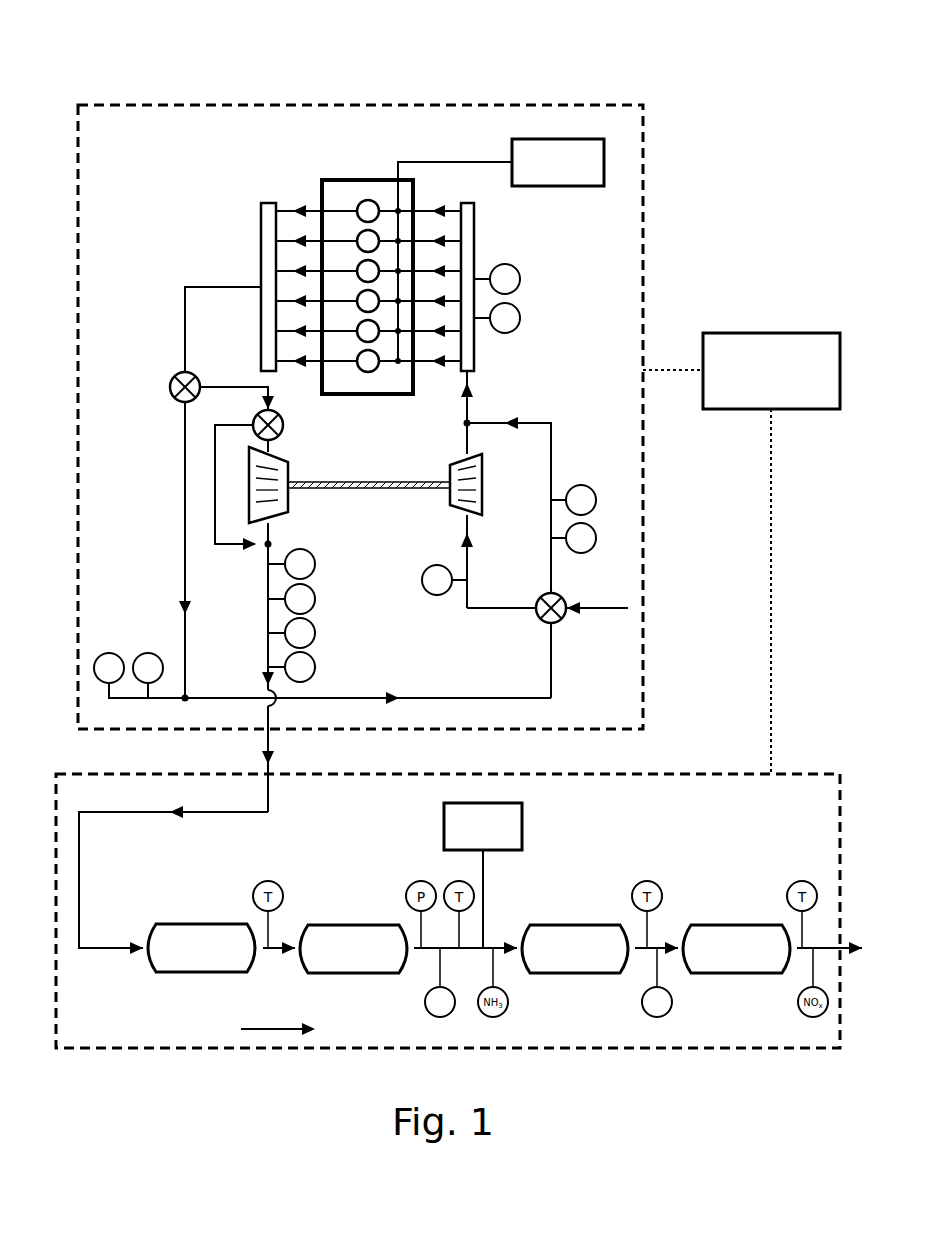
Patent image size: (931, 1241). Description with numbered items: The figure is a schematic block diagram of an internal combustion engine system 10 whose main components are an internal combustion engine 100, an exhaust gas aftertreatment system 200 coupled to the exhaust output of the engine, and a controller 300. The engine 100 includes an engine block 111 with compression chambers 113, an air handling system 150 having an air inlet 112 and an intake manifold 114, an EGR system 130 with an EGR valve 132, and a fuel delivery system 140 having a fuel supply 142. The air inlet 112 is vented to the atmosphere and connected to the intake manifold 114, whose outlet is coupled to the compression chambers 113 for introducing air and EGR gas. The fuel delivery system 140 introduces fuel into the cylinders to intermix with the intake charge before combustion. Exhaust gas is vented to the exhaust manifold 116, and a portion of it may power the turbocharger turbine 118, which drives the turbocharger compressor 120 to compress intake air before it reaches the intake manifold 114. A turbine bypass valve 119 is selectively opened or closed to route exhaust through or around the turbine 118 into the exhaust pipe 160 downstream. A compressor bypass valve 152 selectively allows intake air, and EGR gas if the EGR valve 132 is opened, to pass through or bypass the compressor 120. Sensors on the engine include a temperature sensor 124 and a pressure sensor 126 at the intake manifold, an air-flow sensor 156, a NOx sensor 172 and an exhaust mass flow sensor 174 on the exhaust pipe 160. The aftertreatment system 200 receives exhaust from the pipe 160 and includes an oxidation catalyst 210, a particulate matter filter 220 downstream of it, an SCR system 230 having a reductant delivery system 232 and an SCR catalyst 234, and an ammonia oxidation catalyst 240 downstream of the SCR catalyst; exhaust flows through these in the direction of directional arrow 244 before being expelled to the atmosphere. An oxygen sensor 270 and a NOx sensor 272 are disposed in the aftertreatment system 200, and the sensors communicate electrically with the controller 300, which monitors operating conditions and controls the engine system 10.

The internal combustion engine system 10 is at (114, 66).
The internal combustion engine 100 is at (346, 94).
The engine block 111 is at (328, 178).
The air inlet 112 is at (612, 612).
The compression chambers 113 is at (370, 200).
The intake manifold 114 is at (477, 226).
The exhaust manifold 116 is at (261, 226).
The turbocharger turbine 118 is at (289, 464).
The turbine bypass valve 119 is at (284, 425).
The turbocharger compressor 120 is at (450, 464).
The temperature sensor 124 is at (521, 280).
The pressure sensor 126 is at (521, 319).
The EGR system 130 is at (158, 292).
The EGR valve 132 is at (170, 375).
The fuel delivery system 140 is at (540, 114).
The fuel supply 142 is at (558, 162).
The air handling system 150 is at (513, 396).
The compressor bypass valve 152 is at (540, 618).
The air-flow sensor 156 is at (437, 596).
The exhaust pipe 160 is at (268, 560).
The NOx sensor 172 is at (316, 565).
The exhaust mass flow sensor 174 is at (316, 668).
The exhaust gas aftertreatment system 200 is at (666, 760).
The oxidation catalyst 210 is at (178, 921).
The particulate matter filter 220 is at (356, 921).
The SCR system 230 is at (548, 860).
The reductant delivery system 232 is at (483, 875).
The SCR catalyst 234 is at (580, 921).
The ammonia oxidation catalyst 240 is at (742, 921).
The directional arrow 244 is at (283, 1027).
The oxygen sensor 270 is at (423, 1003).
The NOx sensor 272 is at (640, 1003).
The controller 300 is at (741, 553).